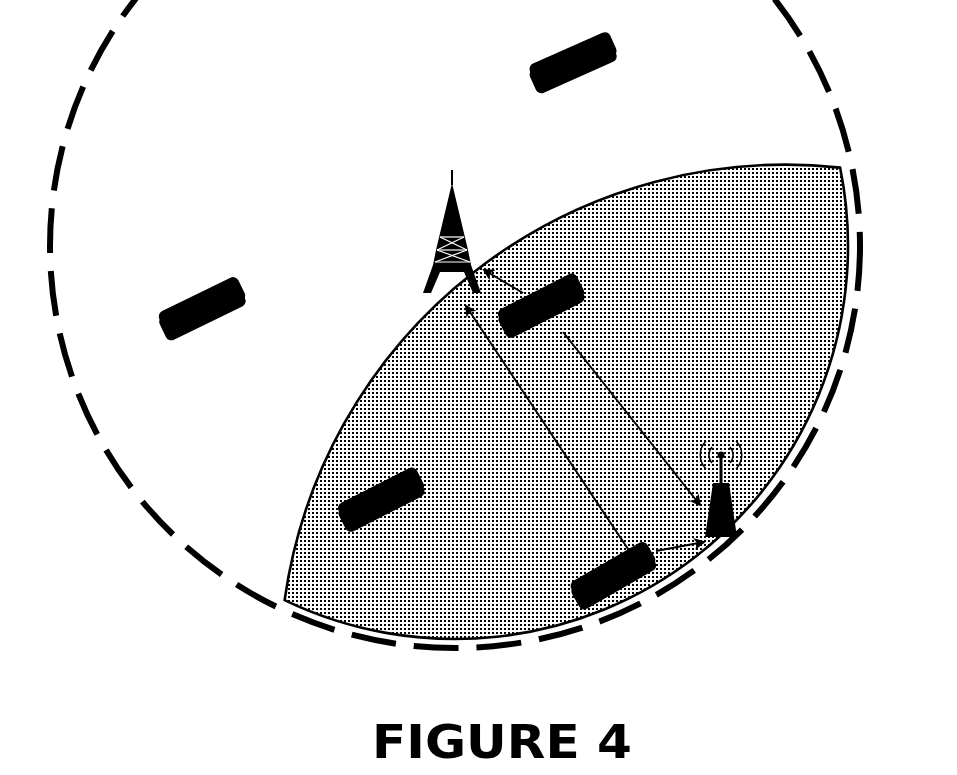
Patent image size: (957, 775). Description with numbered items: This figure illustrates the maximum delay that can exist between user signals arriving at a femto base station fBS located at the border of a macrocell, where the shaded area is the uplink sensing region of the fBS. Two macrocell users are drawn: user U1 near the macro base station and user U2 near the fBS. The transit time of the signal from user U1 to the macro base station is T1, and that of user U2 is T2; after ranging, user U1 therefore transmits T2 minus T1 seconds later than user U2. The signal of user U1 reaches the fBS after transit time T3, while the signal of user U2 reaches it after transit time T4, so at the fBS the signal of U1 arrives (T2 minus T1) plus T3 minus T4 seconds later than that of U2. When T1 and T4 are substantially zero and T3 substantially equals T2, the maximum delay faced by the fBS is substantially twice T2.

The femto base station fBS is at (567, 402).
The user U1 is at (555, 305).
The user U2 is at (608, 576).
The transit time of user U1's signal to the mBS T1 is at (508, 271).
The transit time of user U2's signal to the mBS T2 is at (548, 429).
The transit time of user U1's signal to the fBS T3 is at (631, 418).
The transit time of user U2's signal to the fBS T4 is at (672, 540).